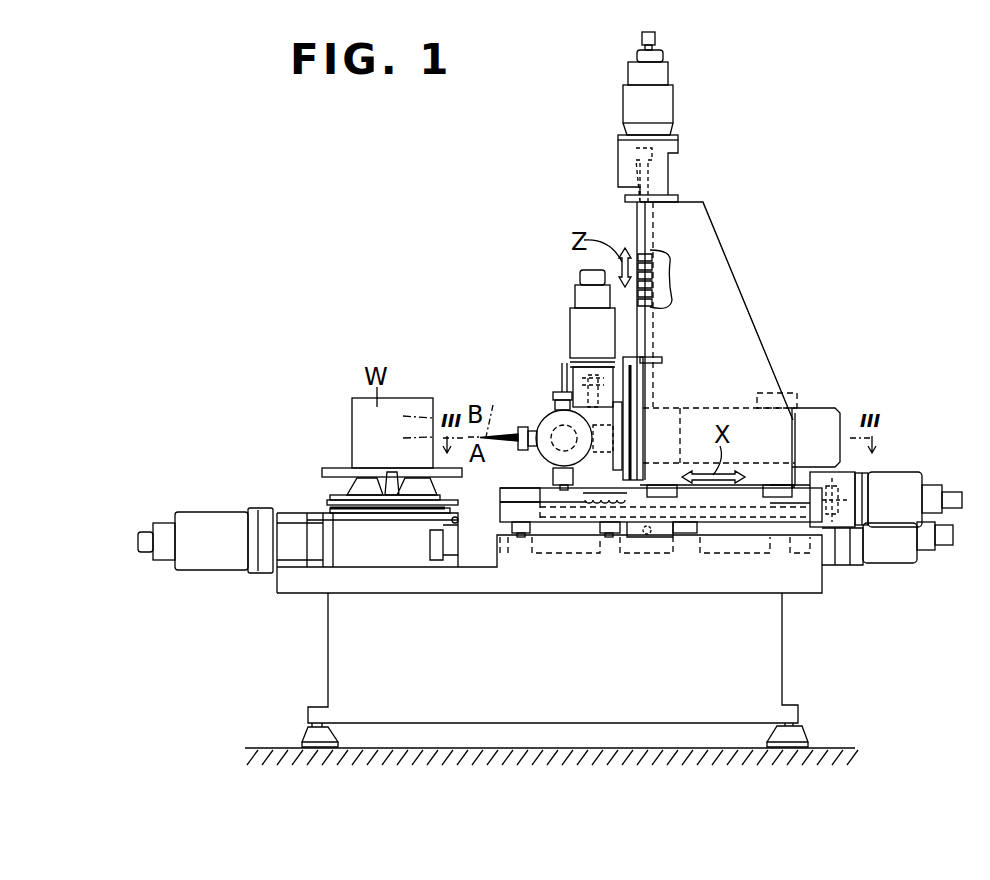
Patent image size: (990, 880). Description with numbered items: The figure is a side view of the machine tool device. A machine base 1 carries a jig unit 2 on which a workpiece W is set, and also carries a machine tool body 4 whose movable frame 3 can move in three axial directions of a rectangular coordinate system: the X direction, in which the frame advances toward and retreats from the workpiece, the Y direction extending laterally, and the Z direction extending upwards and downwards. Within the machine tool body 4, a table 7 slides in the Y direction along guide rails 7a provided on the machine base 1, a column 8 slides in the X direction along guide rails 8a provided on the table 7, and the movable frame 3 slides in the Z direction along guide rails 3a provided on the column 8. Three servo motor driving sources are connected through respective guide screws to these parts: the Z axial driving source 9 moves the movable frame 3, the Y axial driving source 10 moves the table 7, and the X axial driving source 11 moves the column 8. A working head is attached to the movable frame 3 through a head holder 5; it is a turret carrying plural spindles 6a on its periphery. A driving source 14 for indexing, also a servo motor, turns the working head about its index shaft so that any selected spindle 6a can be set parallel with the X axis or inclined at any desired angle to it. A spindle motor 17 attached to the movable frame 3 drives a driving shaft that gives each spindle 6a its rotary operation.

The machine base 1 is at (765, 665).
The jig unit 2 is at (335, 470).
The movable frame 3 is at (650, 363).
The guide rails 3a is at (637, 232).
The machine tool body 4 is at (767, 347).
The head holder 5 is at (541, 417).
The spindles 6a is at (492, 437).
The table 7 is at (577, 510).
The guide rails 7a is at (520, 537).
The column 8 is at (733, 302).
The guide rails 8a is at (513, 493).
The Z axial driving source 9 is at (669, 103).
The Y axial driving source 10 is at (897, 555).
The X axial driving source 11 is at (897, 473).
The driving source for indexing 14 is at (572, 328).
The spindle motor 17 is at (820, 410).